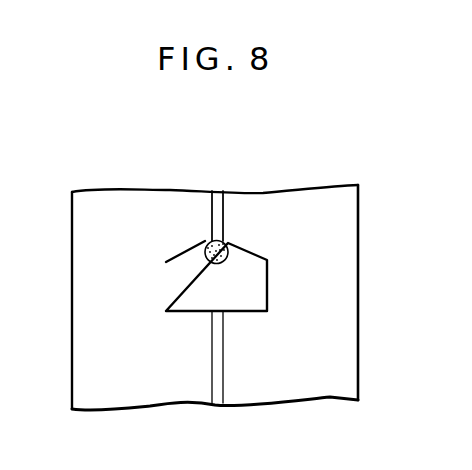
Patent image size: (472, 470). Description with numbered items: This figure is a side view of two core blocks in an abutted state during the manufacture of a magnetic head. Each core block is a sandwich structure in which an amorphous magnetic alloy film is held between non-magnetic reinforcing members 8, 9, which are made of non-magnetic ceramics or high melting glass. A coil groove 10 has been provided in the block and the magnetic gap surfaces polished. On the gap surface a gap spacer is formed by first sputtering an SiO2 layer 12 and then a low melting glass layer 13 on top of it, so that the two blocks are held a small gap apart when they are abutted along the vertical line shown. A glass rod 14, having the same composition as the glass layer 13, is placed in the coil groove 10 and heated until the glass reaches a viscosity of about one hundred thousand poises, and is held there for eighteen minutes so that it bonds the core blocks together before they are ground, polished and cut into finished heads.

The non-magnetic reinforcing member 8 is at (82, 336).
The non-magnetic reinforcing member 9 is at (343, 331).
The coil groove 10 is at (183, 280).
The SiO2 layer 12 is at (215, 405).
The low melting glass layer 13 is at (217, 200).
The glass rod 14 is at (227, 255).